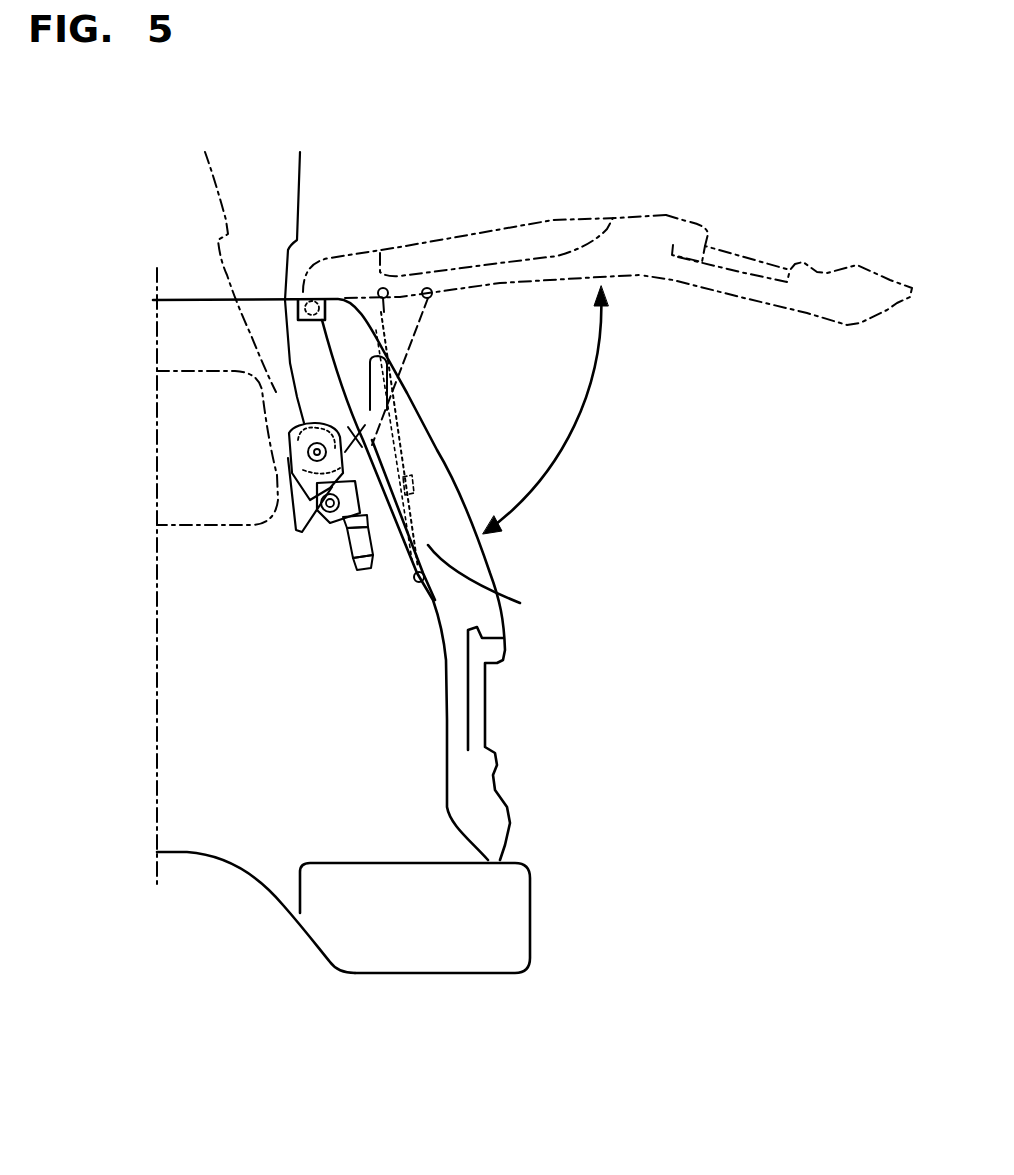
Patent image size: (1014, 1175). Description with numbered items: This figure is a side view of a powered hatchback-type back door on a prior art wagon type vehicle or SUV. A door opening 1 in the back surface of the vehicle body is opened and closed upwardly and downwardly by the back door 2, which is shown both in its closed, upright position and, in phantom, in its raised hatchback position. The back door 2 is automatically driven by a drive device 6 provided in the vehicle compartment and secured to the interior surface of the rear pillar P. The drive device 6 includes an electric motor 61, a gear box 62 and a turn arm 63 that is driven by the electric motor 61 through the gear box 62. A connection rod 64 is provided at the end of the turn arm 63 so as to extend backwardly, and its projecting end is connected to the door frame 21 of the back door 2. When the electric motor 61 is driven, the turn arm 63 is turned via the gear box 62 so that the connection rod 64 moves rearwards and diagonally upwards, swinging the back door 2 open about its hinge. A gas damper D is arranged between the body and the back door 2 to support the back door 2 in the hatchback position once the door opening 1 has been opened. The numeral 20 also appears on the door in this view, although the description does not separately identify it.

The door opening 1 is at (440, 717).
The back door 2 is at (532, 488).
The seat back pad 20 is at (555, 217).
The door frame 21 is at (447, 283).
The drive device 6 is at (205, 357).
The electric motor 61 is at (343, 540).
The gear box 62 is at (300, 270).
The turn arm 63 is at (285, 506).
The connection rod 64 is at (340, 447).
The rear pillar P is at (234, 254).
The gas damper D is at (408, 493).